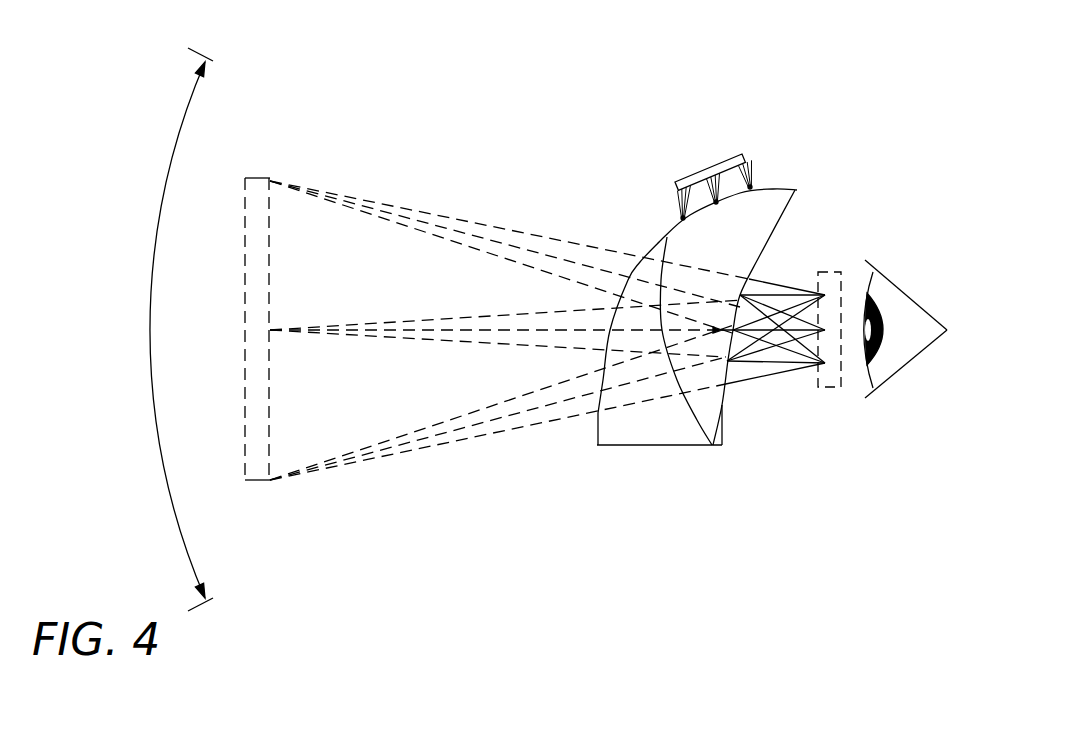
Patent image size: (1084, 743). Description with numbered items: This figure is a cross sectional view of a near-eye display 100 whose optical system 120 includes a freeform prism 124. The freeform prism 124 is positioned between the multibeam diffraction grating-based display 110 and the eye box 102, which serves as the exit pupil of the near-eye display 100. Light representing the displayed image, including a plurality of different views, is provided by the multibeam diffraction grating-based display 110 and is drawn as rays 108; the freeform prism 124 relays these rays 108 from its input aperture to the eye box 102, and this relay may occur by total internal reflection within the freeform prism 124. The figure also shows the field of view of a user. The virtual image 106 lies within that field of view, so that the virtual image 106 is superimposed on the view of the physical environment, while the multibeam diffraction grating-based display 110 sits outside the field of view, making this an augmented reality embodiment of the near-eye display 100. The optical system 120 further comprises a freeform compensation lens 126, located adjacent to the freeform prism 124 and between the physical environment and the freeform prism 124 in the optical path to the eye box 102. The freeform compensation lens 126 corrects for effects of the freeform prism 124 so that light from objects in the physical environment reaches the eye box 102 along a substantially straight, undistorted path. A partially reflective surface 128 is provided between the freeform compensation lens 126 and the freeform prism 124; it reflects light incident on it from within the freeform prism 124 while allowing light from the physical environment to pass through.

The near-eye display 100 is at (823, 44).
The eye box 102 is at (830, 272).
The virtual image 106 is at (260, 178).
The rays 108 is at (656, 215).
The multibeam diffraction grating-based display 110 is at (710, 169).
The optical system 120 is at (719, 540).
The freeform prism 124 is at (773, 191).
The freeform compensation lens 126 is at (648, 446).
The partially reflective surface 128 is at (682, 431).